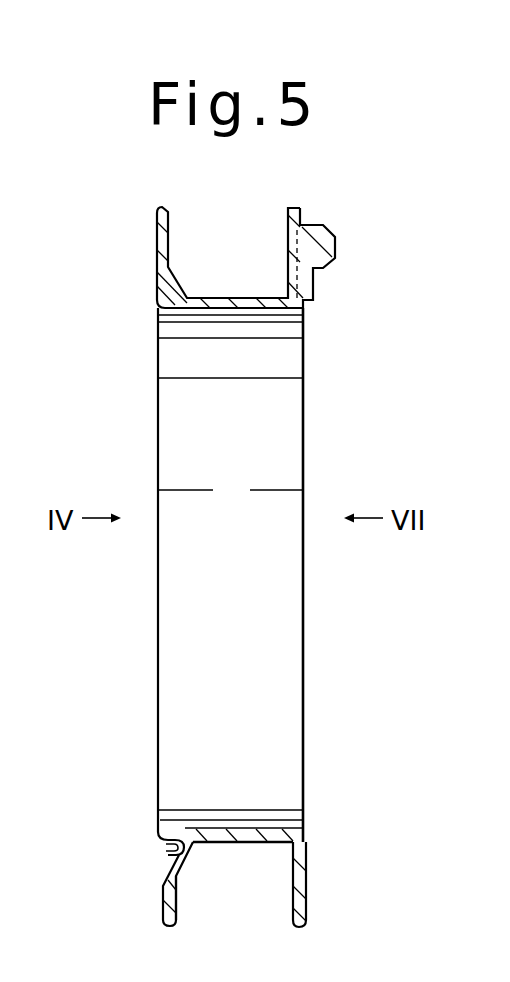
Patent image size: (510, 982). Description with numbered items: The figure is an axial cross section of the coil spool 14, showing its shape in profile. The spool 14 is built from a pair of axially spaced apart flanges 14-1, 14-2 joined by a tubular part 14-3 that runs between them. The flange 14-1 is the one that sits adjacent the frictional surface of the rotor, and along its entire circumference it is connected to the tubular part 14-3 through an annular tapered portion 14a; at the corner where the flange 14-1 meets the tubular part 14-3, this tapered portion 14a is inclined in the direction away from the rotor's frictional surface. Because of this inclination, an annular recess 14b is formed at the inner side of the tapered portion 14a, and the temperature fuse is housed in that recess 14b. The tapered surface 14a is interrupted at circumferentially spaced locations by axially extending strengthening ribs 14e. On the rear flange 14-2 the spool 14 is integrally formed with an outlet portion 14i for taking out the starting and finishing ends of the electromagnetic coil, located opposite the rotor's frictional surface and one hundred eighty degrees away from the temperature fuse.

The coil spool 14 is at (319, 860).
The flange 14-1 is at (161, 901).
The flange 14-2 is at (306, 908).
The tubular part 14-3 is at (266, 828).
The annular tapered portion 14a is at (181, 866).
The annular recess 14b is at (160, 847).
The strengthening rib 14e is at (178, 305).
The outlet portion 14i is at (320, 233).